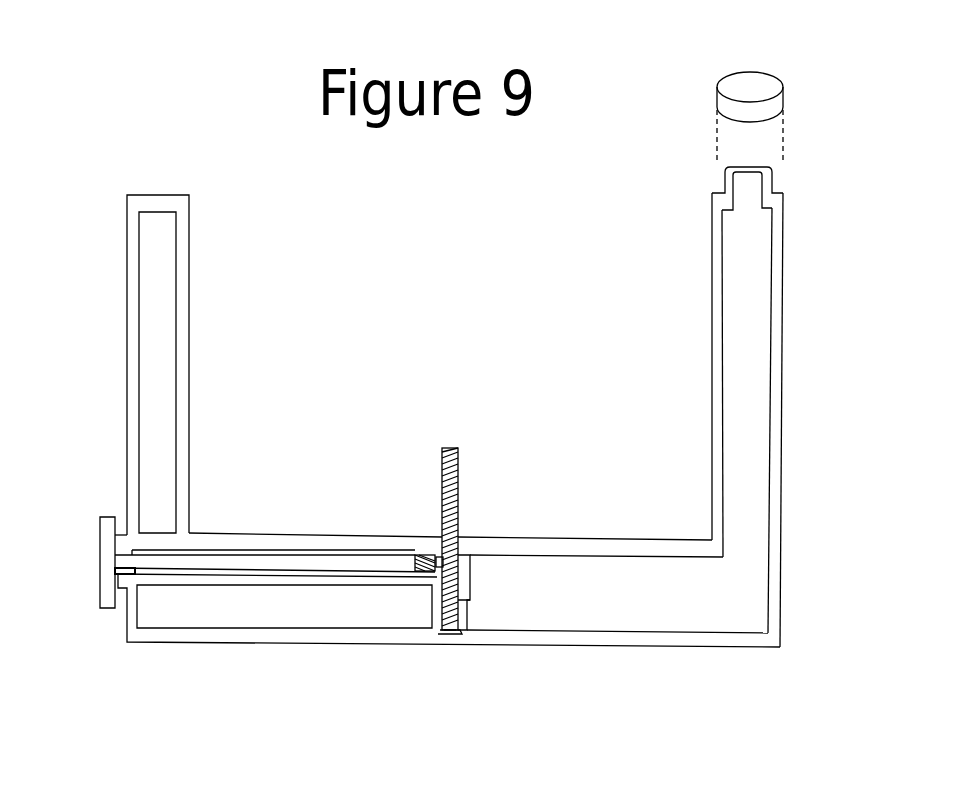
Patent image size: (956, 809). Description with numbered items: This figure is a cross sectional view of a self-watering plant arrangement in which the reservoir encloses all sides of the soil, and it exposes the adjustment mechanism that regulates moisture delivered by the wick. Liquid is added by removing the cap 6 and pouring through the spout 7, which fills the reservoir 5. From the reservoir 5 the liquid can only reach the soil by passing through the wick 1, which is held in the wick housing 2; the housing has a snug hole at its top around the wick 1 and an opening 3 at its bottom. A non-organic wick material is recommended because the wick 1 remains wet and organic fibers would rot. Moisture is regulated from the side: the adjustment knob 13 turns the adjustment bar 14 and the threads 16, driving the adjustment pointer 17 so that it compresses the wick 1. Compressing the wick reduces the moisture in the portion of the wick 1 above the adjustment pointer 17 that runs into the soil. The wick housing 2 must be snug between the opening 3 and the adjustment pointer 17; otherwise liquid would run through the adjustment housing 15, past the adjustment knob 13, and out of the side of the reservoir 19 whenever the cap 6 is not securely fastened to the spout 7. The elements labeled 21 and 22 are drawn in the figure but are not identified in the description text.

The wick 1 is at (462, 487).
The wick housing 2 is at (470, 573).
The opening 3 is at (468, 615).
The reservoir 5 is at (753, 427).
The cap 6 is at (783, 87).
The spout 7 is at (758, 190).
The adjustment knob 13 is at (102, 528).
The adjustment bar 14 is at (322, 565).
The adjustment housing 15 is at (238, 578).
The threads 16 is at (423, 553).
The adjustment pointer 17 is at (439, 556).
The side of the reservoir 19 is at (125, 308).
The foot 21 is at (448, 630).
The housing 22 is at (410, 635).